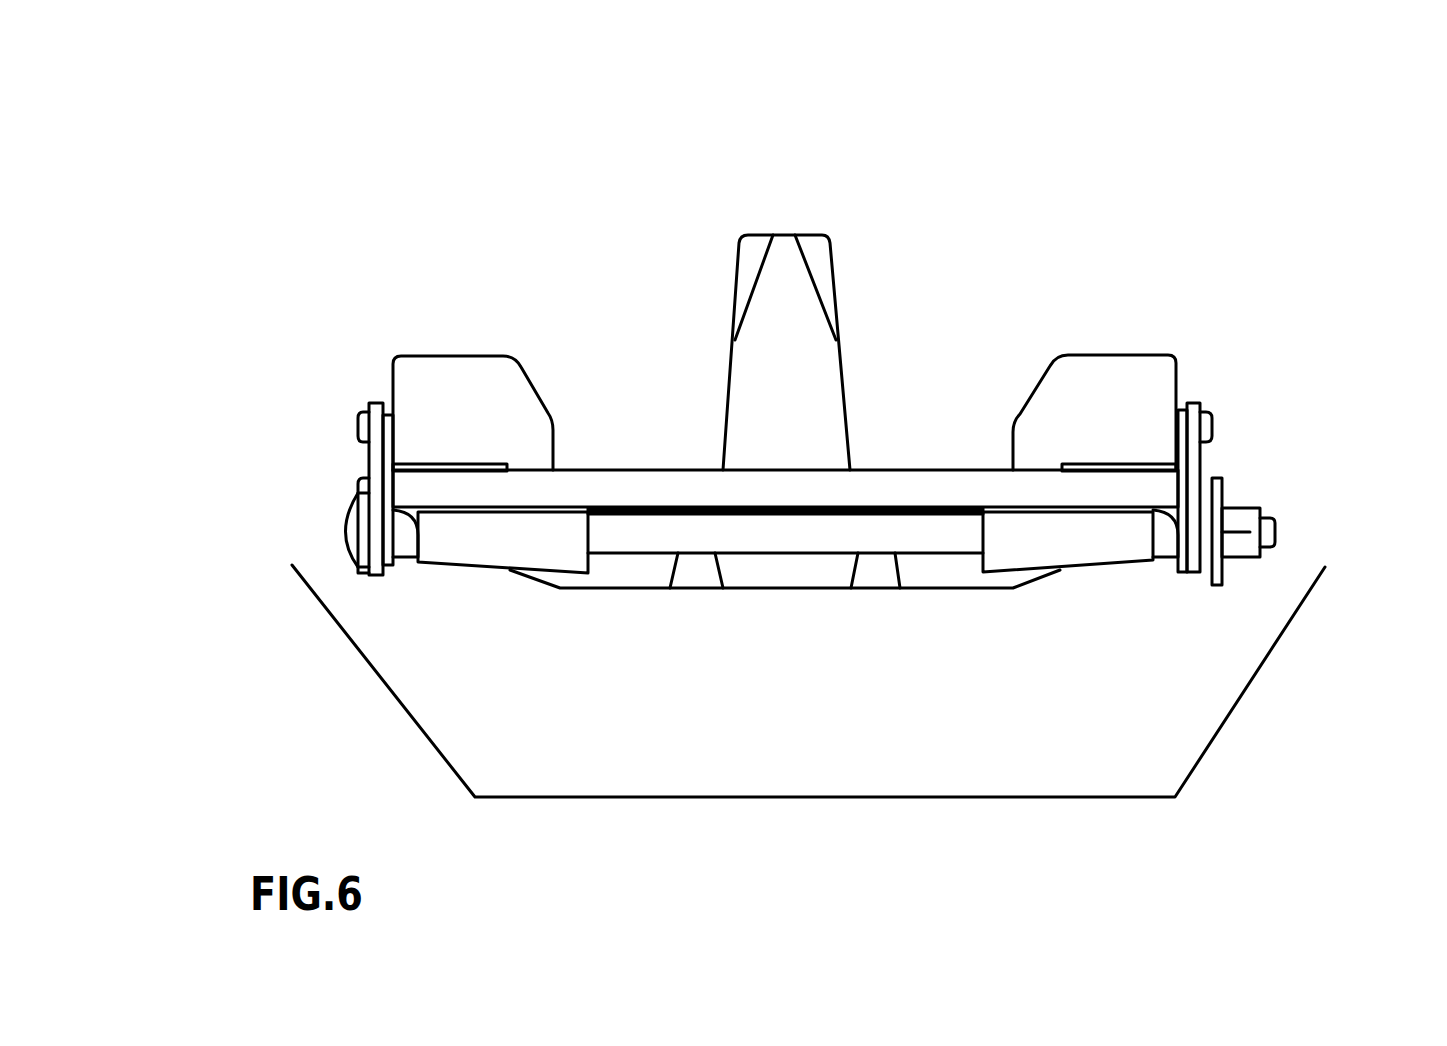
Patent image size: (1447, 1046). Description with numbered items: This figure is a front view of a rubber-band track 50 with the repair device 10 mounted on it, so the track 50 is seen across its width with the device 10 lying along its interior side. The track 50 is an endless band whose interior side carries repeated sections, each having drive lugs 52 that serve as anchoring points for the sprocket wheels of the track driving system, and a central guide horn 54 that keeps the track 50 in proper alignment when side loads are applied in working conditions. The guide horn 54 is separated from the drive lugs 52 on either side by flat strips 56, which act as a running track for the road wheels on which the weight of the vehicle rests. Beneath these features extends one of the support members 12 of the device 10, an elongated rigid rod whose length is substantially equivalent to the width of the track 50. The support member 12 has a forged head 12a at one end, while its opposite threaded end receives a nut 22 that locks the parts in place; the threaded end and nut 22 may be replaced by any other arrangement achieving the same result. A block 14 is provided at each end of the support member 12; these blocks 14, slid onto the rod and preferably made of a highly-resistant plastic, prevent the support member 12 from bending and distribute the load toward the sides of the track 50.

The device 10 is at (828, 797).
The support member 12 is at (898, 542).
The forged head 12a is at (345, 533).
The block 14 is at (497, 540).
The nut 22 is at (1250, 532).
The rubber-band track 50 is at (738, 572).
The drive lug 52 is at (452, 403).
The central guide horn 54 is at (780, 333).
The flat strip 56 is at (616, 472).